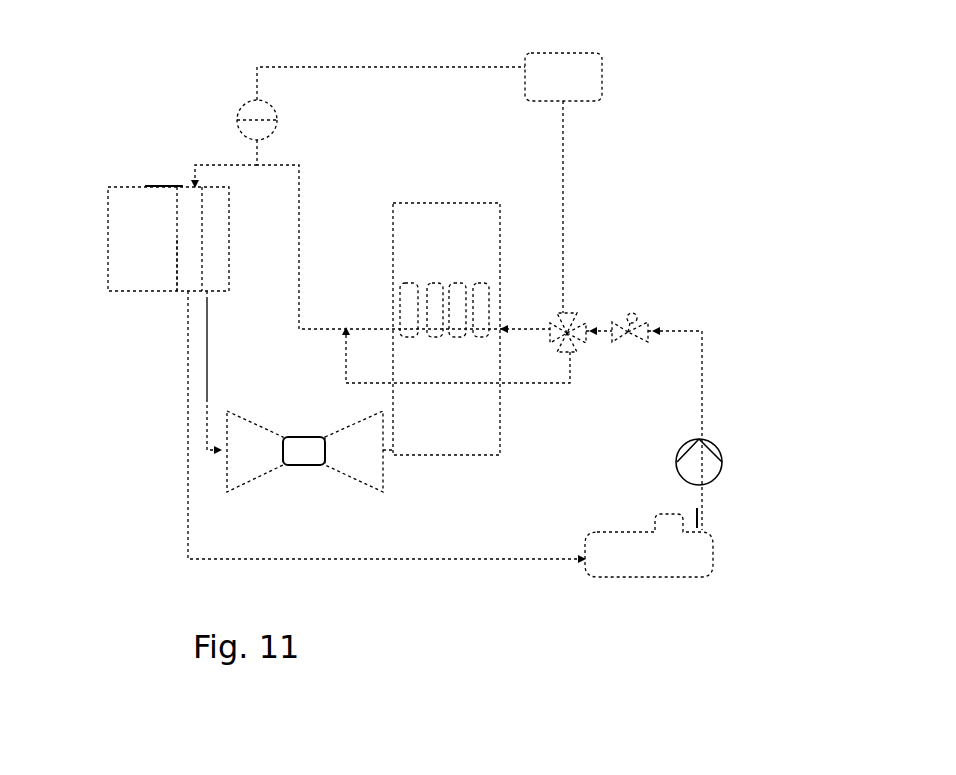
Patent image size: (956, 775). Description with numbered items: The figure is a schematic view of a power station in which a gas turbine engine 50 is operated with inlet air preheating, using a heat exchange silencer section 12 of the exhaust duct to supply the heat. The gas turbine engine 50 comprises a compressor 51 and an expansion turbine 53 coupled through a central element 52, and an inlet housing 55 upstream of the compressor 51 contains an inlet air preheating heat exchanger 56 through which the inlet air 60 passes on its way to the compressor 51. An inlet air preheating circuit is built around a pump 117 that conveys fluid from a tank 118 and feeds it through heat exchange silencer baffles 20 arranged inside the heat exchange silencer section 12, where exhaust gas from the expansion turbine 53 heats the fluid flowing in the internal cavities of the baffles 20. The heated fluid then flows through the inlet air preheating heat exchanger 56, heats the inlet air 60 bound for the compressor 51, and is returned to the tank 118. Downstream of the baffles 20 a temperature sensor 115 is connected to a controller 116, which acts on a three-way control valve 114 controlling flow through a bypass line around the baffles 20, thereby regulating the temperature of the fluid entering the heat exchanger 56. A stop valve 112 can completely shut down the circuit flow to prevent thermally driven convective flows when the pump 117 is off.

The heat exchange silencer section 12 is at (459, 433).
The heat exchange silencer baffles 20 is at (444, 230).
The gas turbine engine 50 is at (299, 476).
The compressor 51 is at (263, 463).
The shaft / motor 52 is at (305, 448).
The expansion turbine 53 is at (368, 463).
The inlet housing 55 is at (154, 251).
The inlet air preheating heat exchanger 56 is at (184, 273).
The inlet air 60 is at (205, 340).
The stop valve 112 is at (628, 332).
The three-way control valve 114 is at (567, 333).
The temperature sensor 115 is at (237, 117).
The controller 116 is at (582, 86).
The pump 117 is at (726, 462).
The tank 118 is at (664, 567).